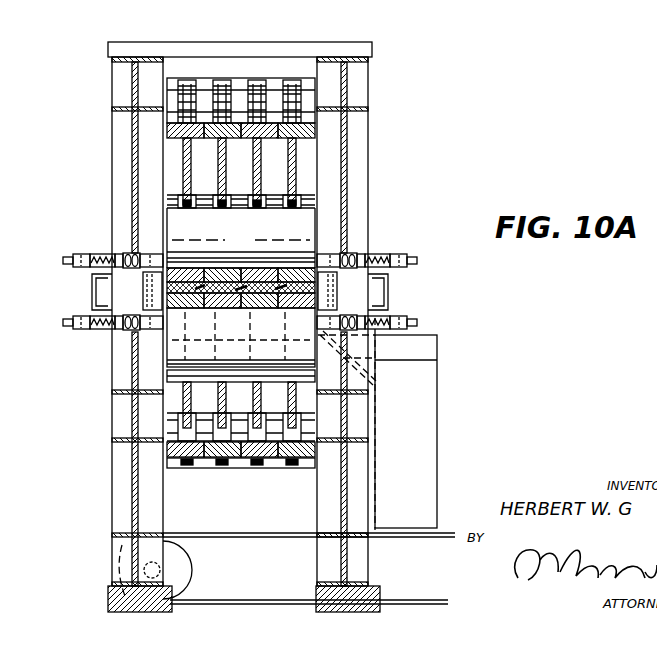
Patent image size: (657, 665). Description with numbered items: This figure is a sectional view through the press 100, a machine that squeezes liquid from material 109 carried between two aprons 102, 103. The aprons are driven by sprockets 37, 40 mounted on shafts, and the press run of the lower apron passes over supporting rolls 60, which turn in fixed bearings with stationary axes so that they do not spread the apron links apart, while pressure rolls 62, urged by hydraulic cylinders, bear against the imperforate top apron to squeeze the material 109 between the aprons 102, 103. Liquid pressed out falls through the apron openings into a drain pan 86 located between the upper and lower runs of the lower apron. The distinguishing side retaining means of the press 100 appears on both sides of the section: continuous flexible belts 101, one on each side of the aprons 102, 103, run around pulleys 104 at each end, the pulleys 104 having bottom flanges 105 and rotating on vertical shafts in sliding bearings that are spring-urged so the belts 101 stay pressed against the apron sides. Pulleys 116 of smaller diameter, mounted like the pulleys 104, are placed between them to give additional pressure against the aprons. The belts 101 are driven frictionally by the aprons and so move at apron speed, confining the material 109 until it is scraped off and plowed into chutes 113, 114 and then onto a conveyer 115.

The press 100 is at (388, 81).
The continuous flexible belts 101 is at (145, 289).
The apron 102 is at (208, 310).
The apron 103 is at (305, 82).
The pulleys 104 is at (94, 287).
The bottom flanges 105 is at (92, 310).
The material 109 is at (231, 309).
The chute 113 is at (343, 347).
The chute 114 is at (415, 462).
The conveyer 115 is at (420, 533).
The pulleys of smaller diameter 116 is at (147, 302).
The sprockets 37 is at (262, 403).
The sprockets 40 is at (251, 174).
The supporting rolls 60 is at (286, 332).
The pressure rolls 62 is at (252, 234).
The drain pan 86 is at (283, 387).